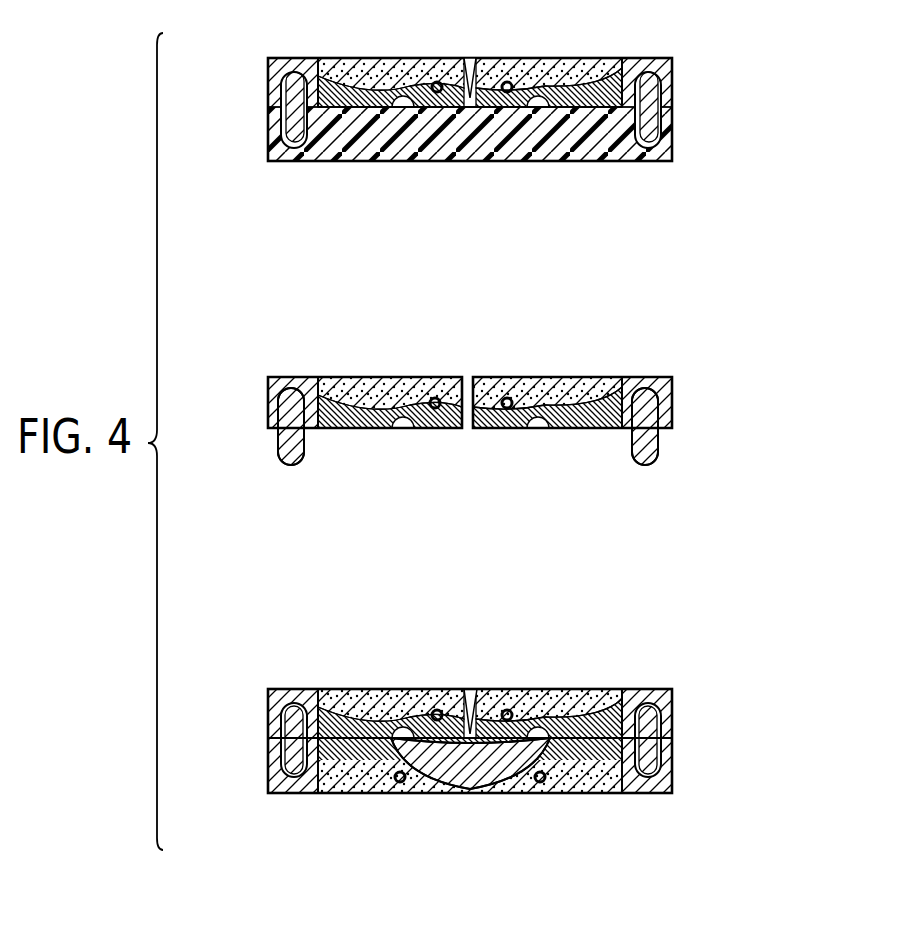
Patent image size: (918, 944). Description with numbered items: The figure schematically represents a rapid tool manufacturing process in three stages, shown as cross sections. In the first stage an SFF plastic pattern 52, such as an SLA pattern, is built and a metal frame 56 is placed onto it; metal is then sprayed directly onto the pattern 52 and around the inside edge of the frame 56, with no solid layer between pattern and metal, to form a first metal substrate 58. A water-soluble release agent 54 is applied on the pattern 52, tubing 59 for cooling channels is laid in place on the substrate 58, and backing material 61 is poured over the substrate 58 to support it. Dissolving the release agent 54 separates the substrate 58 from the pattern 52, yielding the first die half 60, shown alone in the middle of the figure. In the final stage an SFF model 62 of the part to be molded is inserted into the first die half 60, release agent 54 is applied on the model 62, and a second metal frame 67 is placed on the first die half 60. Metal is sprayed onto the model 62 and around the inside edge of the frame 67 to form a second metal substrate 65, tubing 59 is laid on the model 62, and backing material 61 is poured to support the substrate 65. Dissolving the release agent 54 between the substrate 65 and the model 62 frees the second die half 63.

The SLA pattern 52 is at (440, 161).
The water-soluble release agent 54 is at (590, 108).
The metal frame 56 is at (647, 58).
The first metal substrate 58 is at (383, 88).
The tubing 59 is at (512, 80).
The first die half 60 is at (684, 408).
The backing material 61 is at (455, 60).
The SFF model 62 is at (540, 706).
The second die half 63 is at (495, 728).
The second metal substrate 65 is at (603, 787).
The second metal frame 67 is at (262, 781).